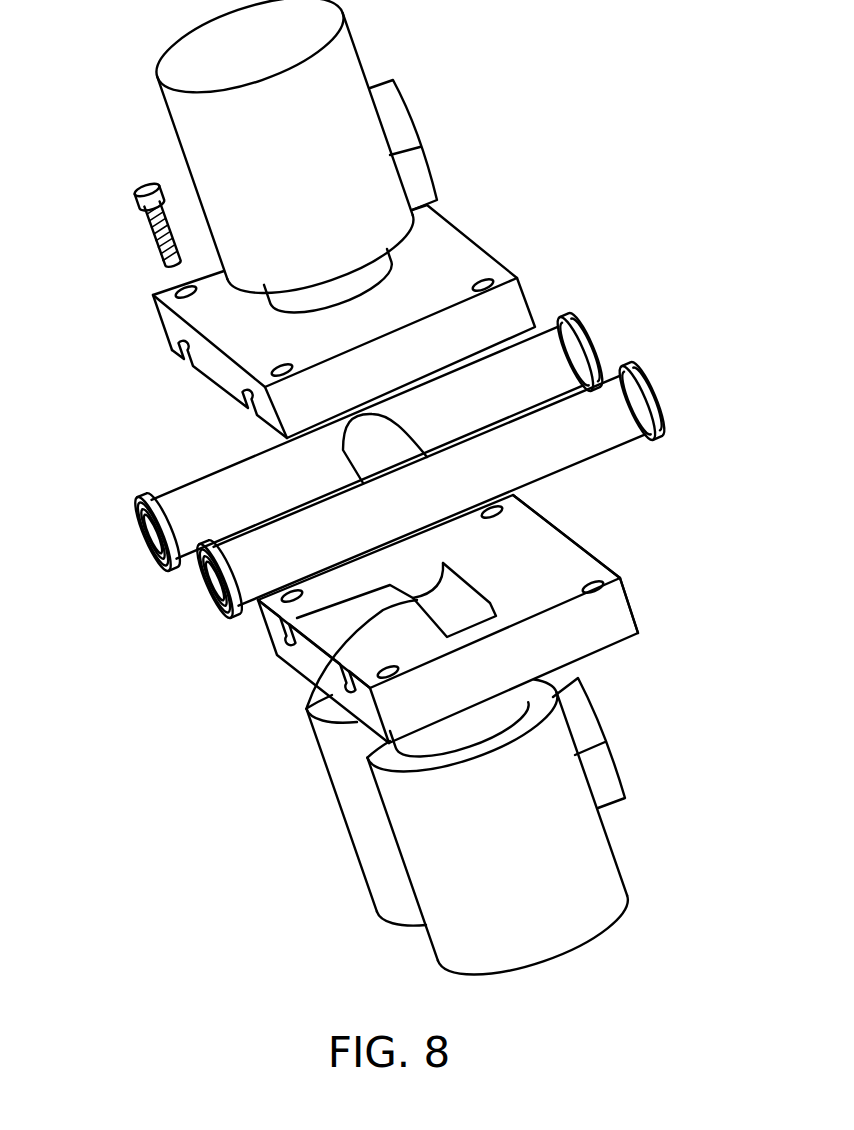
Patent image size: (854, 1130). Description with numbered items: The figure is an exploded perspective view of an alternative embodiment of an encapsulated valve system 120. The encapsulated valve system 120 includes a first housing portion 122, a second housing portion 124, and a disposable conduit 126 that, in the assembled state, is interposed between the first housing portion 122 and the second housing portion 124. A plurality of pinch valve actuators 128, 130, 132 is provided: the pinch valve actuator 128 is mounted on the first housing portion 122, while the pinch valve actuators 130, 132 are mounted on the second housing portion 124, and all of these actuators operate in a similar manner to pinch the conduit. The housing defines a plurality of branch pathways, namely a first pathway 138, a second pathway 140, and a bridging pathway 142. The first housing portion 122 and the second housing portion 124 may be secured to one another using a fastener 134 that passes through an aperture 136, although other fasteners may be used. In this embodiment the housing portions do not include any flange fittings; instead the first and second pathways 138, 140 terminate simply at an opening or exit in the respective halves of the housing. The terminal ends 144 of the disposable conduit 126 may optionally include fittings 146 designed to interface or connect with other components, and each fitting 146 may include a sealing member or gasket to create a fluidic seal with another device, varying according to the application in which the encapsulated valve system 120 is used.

The encapsulated valve system 120 is at (606, 247).
The first housing portion 122 is at (311, 317).
The second housing portion 124 is at (437, 578).
The disposable conduit 126 is at (537, 358).
The pinch valve actuator 128 is at (343, 60).
The pinch valve actuator 130 is at (354, 855).
The pinch valve actuator 132 is at (598, 858).
The fastener 134 is at (154, 238).
The aperture 136 is at (152, 294).
The first pathway 138 is at (278, 640).
The second pathway 140 is at (583, 568).
The bridging pathway 142 is at (330, 675).
The terminal ends 144 is at (579, 309).
The fittings 146 is at (584, 347).